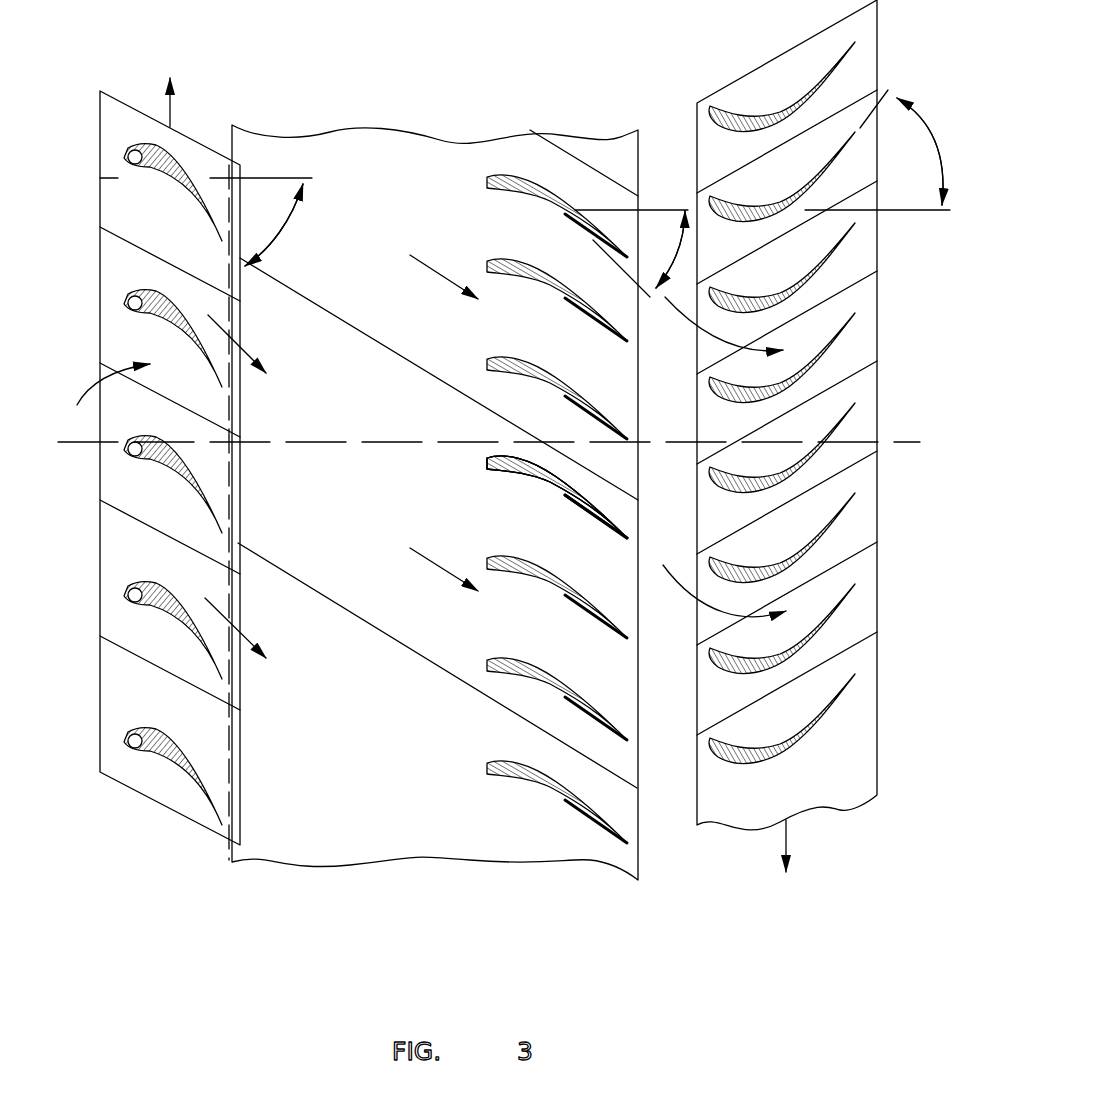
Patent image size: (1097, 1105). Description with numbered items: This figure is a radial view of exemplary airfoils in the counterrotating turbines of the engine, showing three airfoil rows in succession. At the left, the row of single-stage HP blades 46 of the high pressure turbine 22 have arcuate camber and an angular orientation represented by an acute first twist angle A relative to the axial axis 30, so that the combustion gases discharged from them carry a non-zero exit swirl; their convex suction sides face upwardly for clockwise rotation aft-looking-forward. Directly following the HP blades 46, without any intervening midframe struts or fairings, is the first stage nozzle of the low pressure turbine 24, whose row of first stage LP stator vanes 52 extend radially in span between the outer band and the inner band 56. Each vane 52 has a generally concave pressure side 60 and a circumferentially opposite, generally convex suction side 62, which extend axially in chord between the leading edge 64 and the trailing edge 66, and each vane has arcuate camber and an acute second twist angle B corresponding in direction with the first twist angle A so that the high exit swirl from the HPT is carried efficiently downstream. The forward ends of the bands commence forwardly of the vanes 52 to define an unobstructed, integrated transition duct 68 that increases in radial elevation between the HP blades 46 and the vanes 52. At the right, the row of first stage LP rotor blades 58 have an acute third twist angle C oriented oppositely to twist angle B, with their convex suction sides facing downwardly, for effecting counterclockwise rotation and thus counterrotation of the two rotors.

The high pressure turbine 22 is at (188, 110).
The HP blades 46 is at (140, 292).
The inner band 56 is at (347, 130).
The transition duct 68 is at (388, 784).
The first stage LP stator vanes 52 is at (540, 185).
The pressure side 60 is at (527, 478).
The suction side 62 is at (527, 462).
The leading edge 64 is at (485, 465).
The trailing edge 66 is at (608, 525).
The axial axis 30 is at (418, 441).
The low pressure turbine 24 is at (640, 114).
The first stage LP rotor blades 58 is at (750, 122).
The first twist angle A is at (287, 230).
The second twist angle B is at (672, 252).
The third twist angle C is at (928, 123).